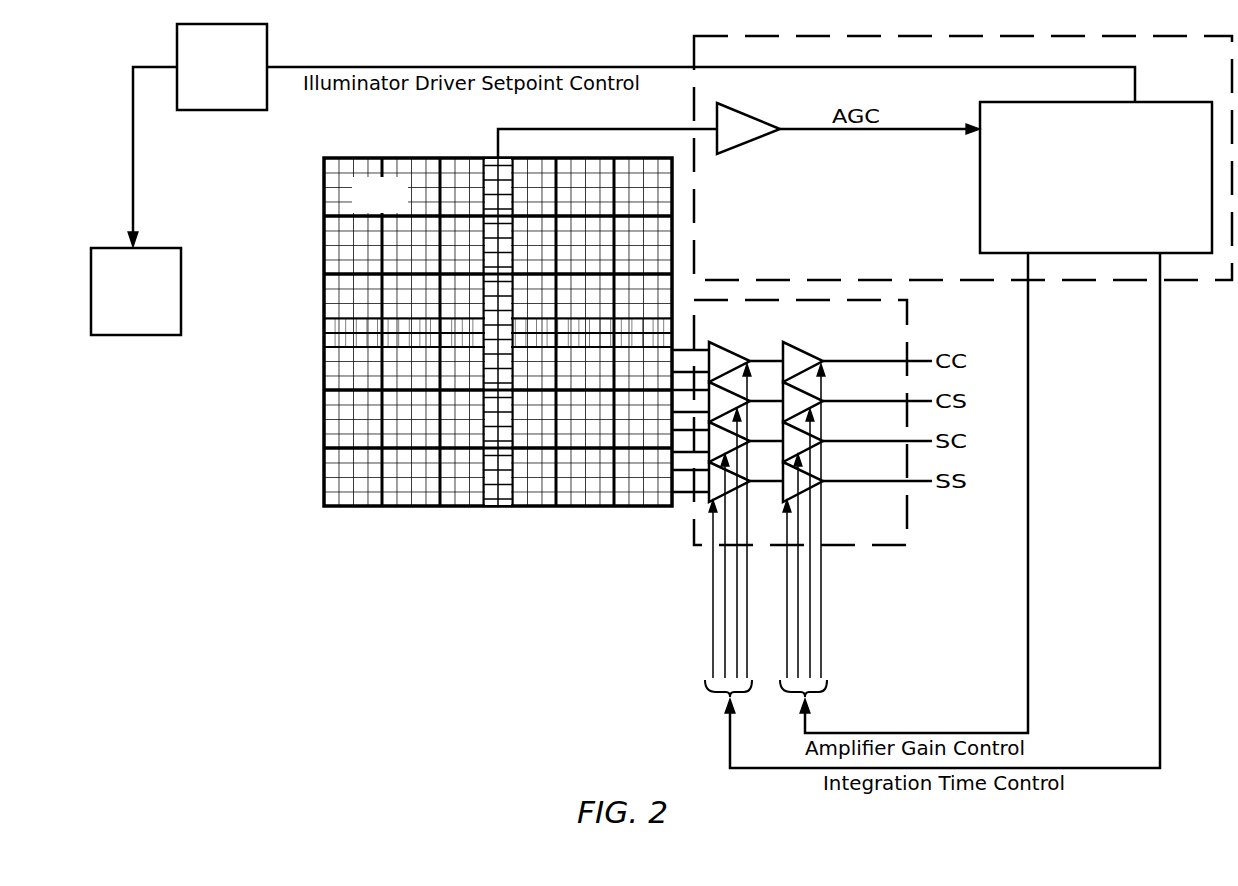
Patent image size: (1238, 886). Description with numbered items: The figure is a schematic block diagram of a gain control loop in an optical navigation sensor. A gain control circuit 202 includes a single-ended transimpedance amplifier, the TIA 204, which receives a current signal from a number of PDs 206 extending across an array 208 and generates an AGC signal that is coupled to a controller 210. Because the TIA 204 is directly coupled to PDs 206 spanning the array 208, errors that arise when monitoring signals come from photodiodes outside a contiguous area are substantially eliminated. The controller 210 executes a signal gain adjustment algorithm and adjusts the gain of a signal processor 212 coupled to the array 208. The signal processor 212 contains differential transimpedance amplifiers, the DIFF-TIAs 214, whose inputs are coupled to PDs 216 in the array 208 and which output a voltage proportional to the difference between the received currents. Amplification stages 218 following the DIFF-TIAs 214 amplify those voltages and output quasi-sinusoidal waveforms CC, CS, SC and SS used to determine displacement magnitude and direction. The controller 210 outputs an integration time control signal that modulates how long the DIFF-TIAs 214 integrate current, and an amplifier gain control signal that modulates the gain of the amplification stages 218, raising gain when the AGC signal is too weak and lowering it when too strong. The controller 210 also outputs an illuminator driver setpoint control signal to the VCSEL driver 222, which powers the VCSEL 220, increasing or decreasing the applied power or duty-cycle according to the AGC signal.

The gain control circuit 202 is at (1214, 72).
The transimpedance amplifier (TIA) 204 is at (744, 155).
The photodiodes (PDs) 206 is at (497, 516).
The array 208 is at (399, 208).
The controller 210 is at (1183, 150).
The signal processor 212 is at (889, 538).
The differential transimpedance amplifiers (DIFF-TIAs) 214 is at (720, 335).
The photodiodes (PDs) 216 is at (613, 516).
The amplification stages 218 is at (795, 335).
The VCSEL 220 is at (182, 292).
The VCSEL driver 222 is at (226, 111).